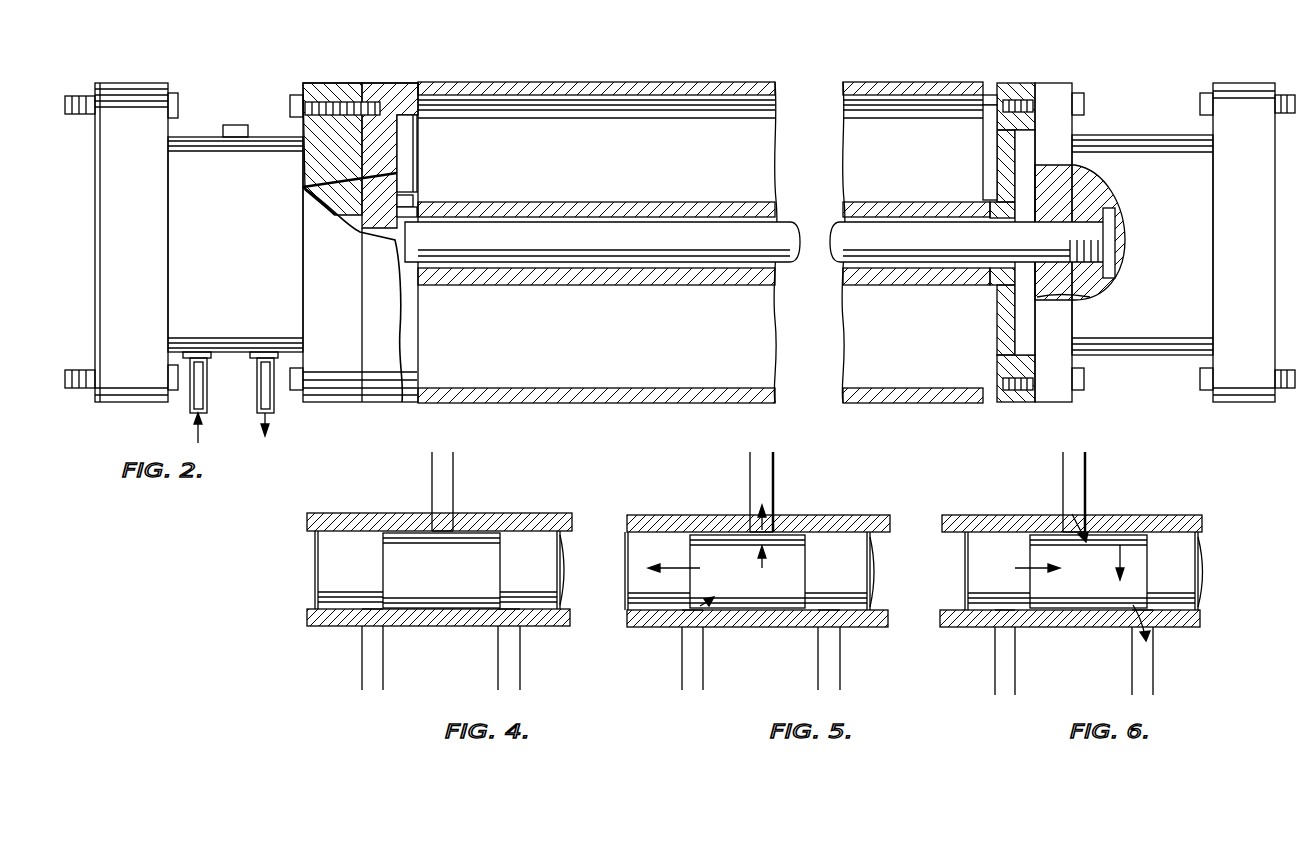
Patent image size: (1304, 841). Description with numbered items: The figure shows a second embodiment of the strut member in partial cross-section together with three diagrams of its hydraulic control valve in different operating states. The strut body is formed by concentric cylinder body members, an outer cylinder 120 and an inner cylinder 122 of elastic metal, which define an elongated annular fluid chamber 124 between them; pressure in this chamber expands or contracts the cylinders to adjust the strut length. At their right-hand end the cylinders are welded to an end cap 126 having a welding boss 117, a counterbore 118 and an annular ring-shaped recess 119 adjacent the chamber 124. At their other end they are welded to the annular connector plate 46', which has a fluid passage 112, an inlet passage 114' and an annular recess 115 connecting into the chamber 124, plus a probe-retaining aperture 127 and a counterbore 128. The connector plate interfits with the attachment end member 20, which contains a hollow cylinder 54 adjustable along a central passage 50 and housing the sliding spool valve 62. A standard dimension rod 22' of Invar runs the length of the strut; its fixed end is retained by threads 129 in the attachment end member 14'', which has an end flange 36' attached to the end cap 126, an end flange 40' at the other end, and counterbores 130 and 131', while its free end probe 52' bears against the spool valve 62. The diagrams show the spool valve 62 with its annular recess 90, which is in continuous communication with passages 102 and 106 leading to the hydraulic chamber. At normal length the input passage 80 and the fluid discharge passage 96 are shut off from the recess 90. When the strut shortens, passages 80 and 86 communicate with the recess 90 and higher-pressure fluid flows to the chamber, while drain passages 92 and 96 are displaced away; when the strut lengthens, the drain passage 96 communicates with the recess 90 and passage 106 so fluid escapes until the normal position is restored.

In FIG. 2, the attachment end member 20 is at (198, 137).
In FIG. 2, the annular connector plate 46' is at (360, 228).
In FIG. 2, the inlet passage 114' is at (331, 136).
In FIG. 2, the fluid passage 112 is at (305, 180).
In FIG. 2, the free end probe 52' is at (352, 294).
In FIG. 2, the annular recess 115 is at (418, 120).
In FIG. 2, the aperture 127 is at (413, 192).
In FIG. 2, the counterbore 128 is at (415, 210).
In FIG. 2, the outer cylinder 120 is at (617, 83).
In FIG. 2, the inner cylinder 122 is at (740, 208).
In FIG. 2, the standard dimension rod 22' is at (756, 216).
In FIG. 2, the welding boss 117 is at (993, 103).
In FIG. 2, the counterbore 118 is at (1033, 130).
In FIG. 2, the annular ring-shaped recess 119 is at (987, 140).
In FIG. 2, the annular fluid chamber 124 is at (938, 172).
In FIG. 2, the end cap 126 is at (1005, 155).
In FIG. 2, the threads 129 is at (1077, 230).
In FIG. 2, the counterbore 130 is at (1080, 228).
In FIG. 2, the counterbore 131' is at (1083, 298).
In FIG. 2, the end flange 36' is at (1077, 226).
In FIG. 2, the attachment end member 14'' is at (1142, 225).
In FIG. 2, the end flange 40' is at (1247, 228).
In FIG. 4, the hollow cylinder 54 is at (540, 522).
In FIG. 4, the central passage 50 is at (563, 608).
In FIG. 4, the spool valve 62 is at (340, 540).
In FIG. 5, the spool valve 62 is at (657, 540).
In FIG. 6, the spool valve 62 is at (992, 540).
In FIG. 4, the annular recess 90 is at (400, 537).
In FIG. 5, the annular recess 90 is at (790, 540).
In FIG. 6, the annular recess 90 is at (1045, 537).
In FIG. 4, the fluid passage 106 is at (443, 481).
In FIG. 5, the fluid passage 106 is at (763, 479).
In FIG. 6, the fluid passage 106 is at (1086, 480).
In FIG. 4, the passage 102 is at (438, 522).
In FIG. 5, the passage 102 is at (770, 522).
In FIG. 6, the passage 102 is at (1083, 522).
In FIG. 4, the input passage 80 is at (372, 667).
In FIG. 5, the input passage 80 is at (690, 660).
In FIG. 6, the input passage 80 is at (1005, 660).
In FIG. 4, the passage 86 is at (360, 613).
In FIG. 5, the passage 86 is at (686, 613).
In FIG. 6, the passage 86 is at (1002, 617).
In FIG. 4, the fluid discharge passage 96 is at (508, 678).
In FIG. 5, the fluid discharge passage 96 is at (830, 660).
In FIG. 6, the fluid discharge passage 96 is at (1142, 665).
In FIG. 4, the drain passage 92 is at (510, 617).
In FIG. 5, the drain passage 92 is at (832, 617).
In FIG. 6, the drain passage 92 is at (1132, 613).